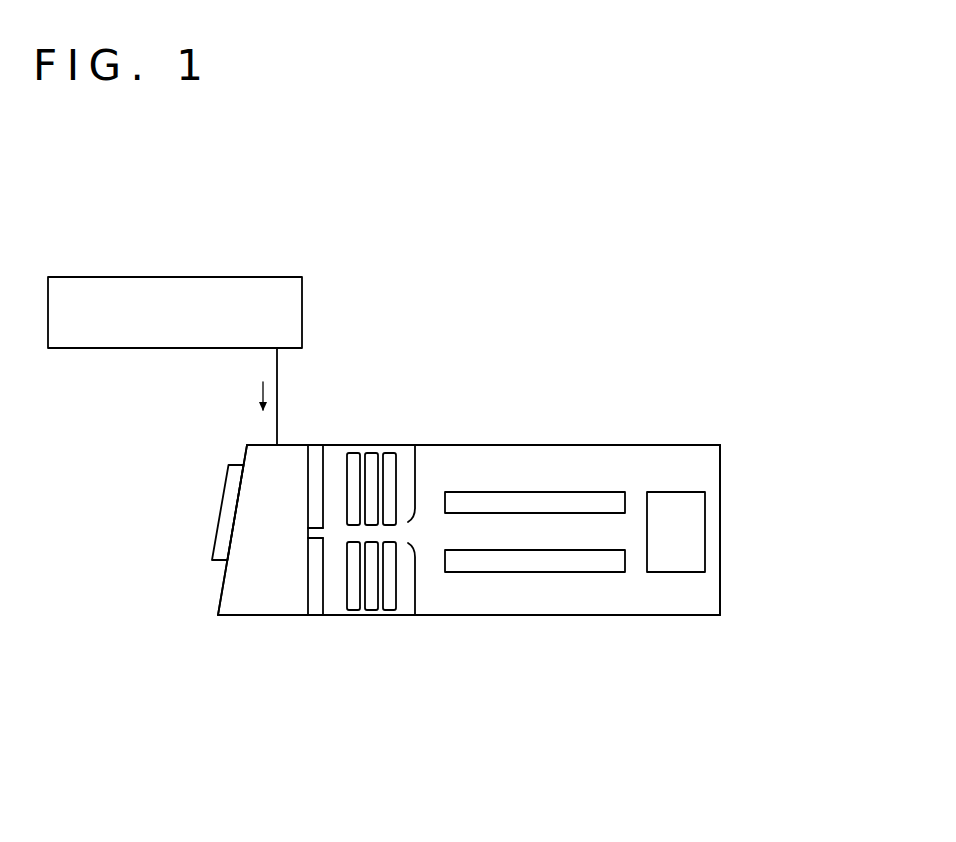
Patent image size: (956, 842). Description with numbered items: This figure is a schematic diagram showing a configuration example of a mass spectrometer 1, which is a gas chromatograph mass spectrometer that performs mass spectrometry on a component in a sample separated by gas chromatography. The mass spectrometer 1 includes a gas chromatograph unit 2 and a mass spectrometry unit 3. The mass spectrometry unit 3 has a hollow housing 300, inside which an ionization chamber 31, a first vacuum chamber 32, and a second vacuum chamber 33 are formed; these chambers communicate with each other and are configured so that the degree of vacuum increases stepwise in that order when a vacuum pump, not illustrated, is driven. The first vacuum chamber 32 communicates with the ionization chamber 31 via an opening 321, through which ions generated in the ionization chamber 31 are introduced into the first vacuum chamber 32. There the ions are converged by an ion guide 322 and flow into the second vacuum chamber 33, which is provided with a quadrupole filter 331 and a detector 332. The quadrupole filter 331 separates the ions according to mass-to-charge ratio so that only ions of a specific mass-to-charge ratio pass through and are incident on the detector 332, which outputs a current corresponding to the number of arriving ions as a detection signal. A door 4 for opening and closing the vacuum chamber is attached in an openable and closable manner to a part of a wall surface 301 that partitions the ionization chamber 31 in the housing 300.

The mass spectrometer 1 is at (524, 323).
The gas chromatograph unit 2 is at (140, 277).
The mass spectrometry unit 3 is at (672, 443).
The door 4 is at (225, 512).
The ionization chamber 31 is at (257, 615).
The first vacuum chamber 32 is at (410, 613).
The second vacuum chamber 33 is at (560, 615).
The housing 300 is at (720, 523).
The wall surface 301 is at (223, 588).
The opening 321 is at (312, 538).
The ion guide 322 is at (372, 445).
The quadrupole filter 331 is at (580, 492).
The detector 332 is at (677, 572).